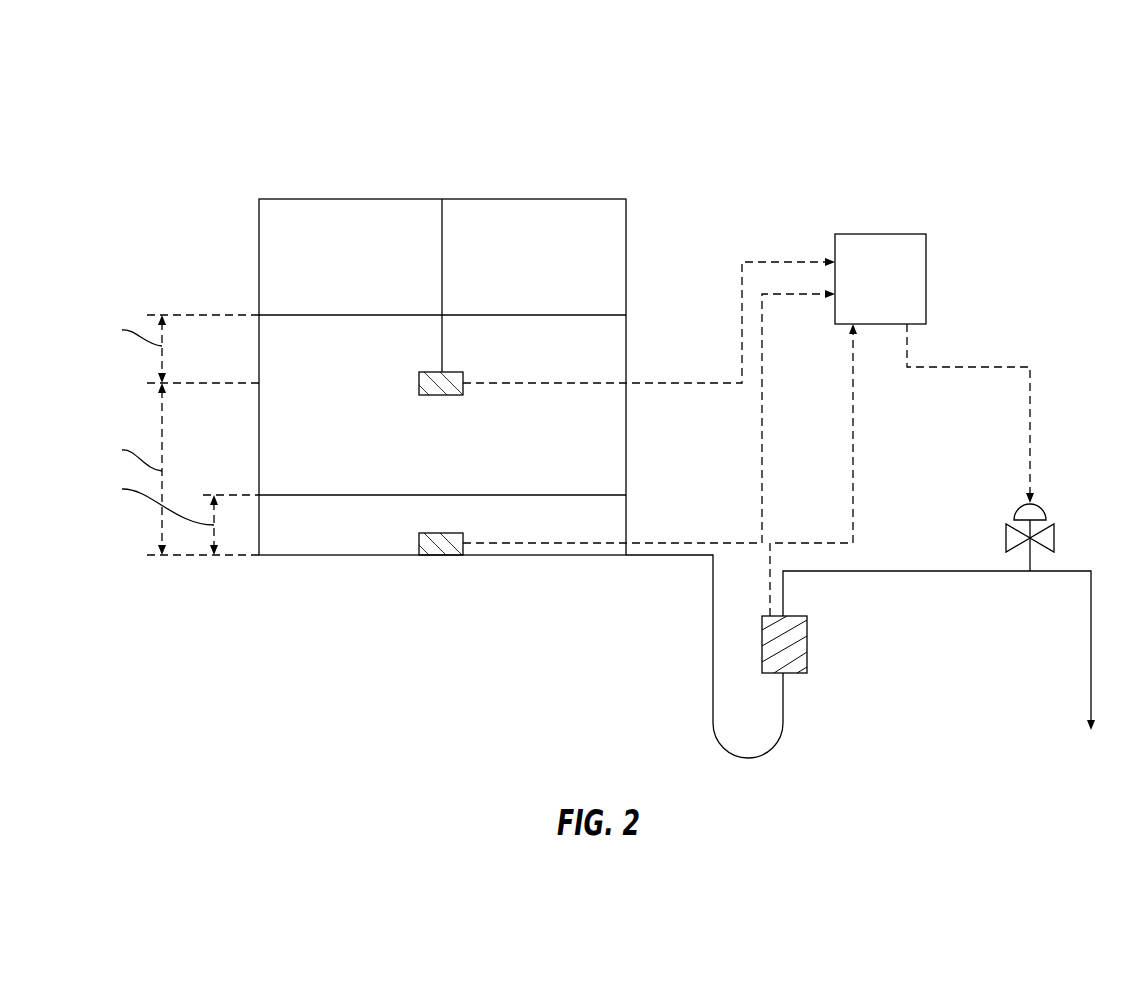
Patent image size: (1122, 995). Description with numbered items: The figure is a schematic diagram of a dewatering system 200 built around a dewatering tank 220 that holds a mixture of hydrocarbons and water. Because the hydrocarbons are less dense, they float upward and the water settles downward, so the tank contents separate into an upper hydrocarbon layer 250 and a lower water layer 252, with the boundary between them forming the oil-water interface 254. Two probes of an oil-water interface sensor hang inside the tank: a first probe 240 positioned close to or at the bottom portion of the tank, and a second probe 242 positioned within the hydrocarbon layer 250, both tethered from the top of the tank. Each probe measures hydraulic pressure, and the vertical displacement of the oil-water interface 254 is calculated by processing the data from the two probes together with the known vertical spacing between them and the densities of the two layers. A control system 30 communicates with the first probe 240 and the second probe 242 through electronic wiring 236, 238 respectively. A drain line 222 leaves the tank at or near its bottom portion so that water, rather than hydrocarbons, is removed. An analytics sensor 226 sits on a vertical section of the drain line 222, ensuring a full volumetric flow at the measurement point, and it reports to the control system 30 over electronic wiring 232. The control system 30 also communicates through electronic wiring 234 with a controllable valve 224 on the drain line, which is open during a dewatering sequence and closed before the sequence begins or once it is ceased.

The dewatering system 200 is at (203, 97).
The dewatering tank 220 is at (259, 258).
The drain line 222 is at (900, 571).
The controllable valve 224 is at (1040, 512).
The analytics sensor 226 is at (807, 645).
The electronic wiring 232 is at (853, 434).
The electronic wiring 234 is at (1030, 440).
The electronic wiring 236 is at (762, 421).
The electronic wiring 238 is at (742, 323).
The first probe 240 is at (425, 533).
The second probe 242 is at (425, 372).
The hydrocarbon layer 250 is at (323, 437).
The water layer 252 is at (323, 548).
The oil-water interface 254 is at (593, 495).
The controller 30 is at (893, 290).